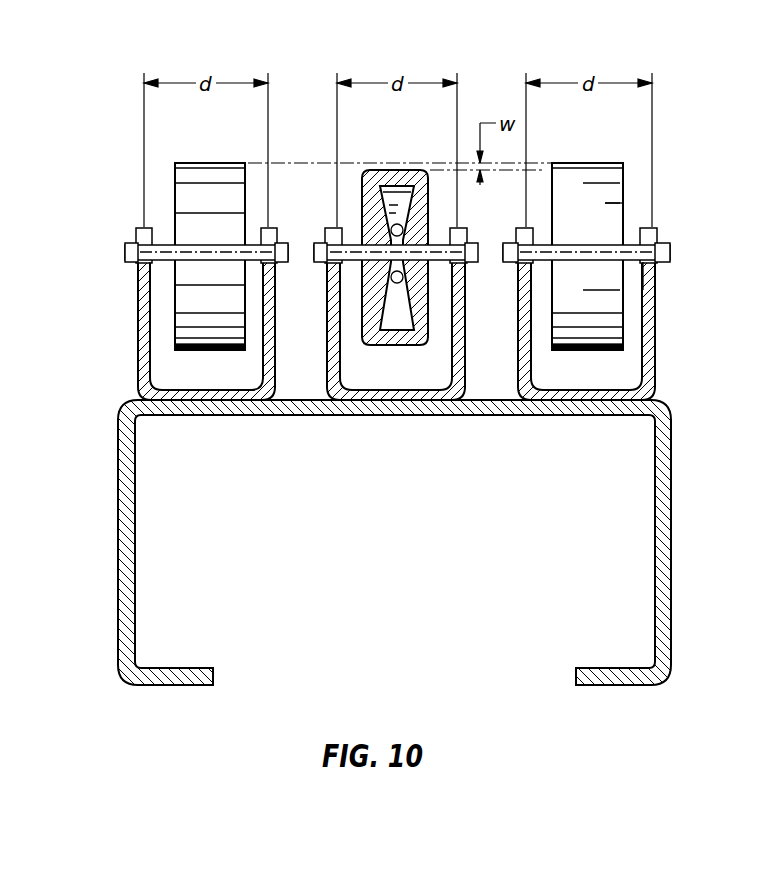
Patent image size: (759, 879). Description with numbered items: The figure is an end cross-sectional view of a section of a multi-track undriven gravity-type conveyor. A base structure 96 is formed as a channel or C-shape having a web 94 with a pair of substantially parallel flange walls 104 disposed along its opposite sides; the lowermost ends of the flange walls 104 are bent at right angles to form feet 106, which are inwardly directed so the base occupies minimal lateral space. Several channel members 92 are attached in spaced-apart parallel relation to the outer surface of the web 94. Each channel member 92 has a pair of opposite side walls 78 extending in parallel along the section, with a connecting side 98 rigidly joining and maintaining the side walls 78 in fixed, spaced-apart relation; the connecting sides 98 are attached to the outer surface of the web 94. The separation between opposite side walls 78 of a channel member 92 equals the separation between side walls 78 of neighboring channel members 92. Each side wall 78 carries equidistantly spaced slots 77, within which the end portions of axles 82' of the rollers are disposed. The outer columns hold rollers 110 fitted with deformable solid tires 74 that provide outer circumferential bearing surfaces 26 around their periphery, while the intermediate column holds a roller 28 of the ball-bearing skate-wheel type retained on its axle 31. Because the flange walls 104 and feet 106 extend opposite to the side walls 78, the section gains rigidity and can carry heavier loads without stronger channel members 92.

The outer circumferential bearing surface 26 is at (598, 163).
The central roller with ball bearing 28 is at (397, 170).
The axle bolt 31 is at (535, 245).
The deformable solid tire 74 is at (612, 195).
The slot 77 is at (143, 230).
The side wall 78 is at (140, 381).
The axle 82' is at (392, 288).
The channel member 92 is at (139, 333).
The web 94 is at (478, 400).
The base structure 96 is at (672, 497).
The connecting side 98 is at (200, 383).
The flange wall 104 is at (135, 528).
The foot 106 is at (595, 668).
The roller 110 is at (623, 218).